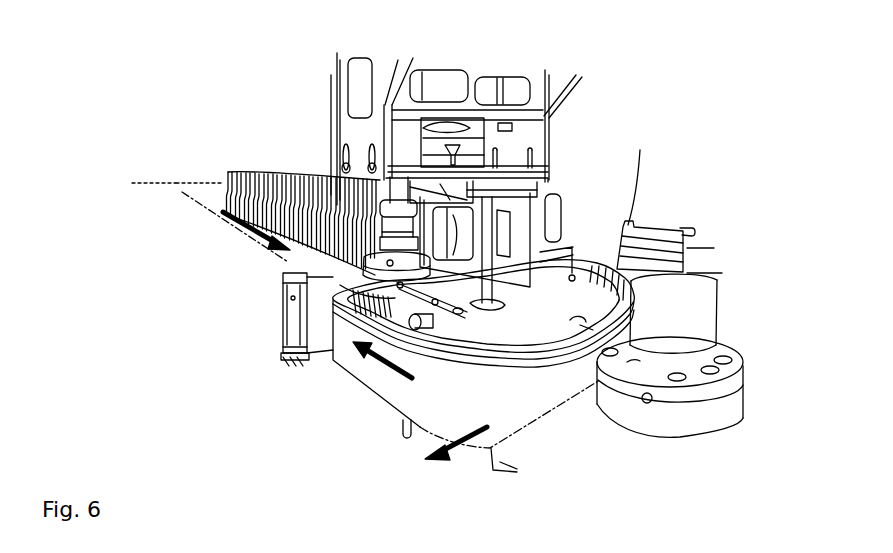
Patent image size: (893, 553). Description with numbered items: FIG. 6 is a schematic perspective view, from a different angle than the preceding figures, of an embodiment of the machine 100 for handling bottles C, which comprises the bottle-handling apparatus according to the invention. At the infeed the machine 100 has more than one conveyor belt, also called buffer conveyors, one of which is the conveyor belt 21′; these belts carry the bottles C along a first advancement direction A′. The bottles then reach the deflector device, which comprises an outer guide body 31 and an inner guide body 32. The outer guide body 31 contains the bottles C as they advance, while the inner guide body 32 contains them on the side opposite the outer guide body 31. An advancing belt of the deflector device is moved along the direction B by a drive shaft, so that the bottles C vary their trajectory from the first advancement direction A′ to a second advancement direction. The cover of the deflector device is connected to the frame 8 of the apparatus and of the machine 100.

The machine 100 is at (134, 66).
The frame 8 is at (337, 83).
The outer guide body 31 is at (599, 263).
The inner guide body 32 is at (253, 400).
The conveyor belt 21′ is at (193, 182).
The bottles C is at (260, 167).
The first advancement direction A′ is at (246, 232).
The direction B is at (383, 362).